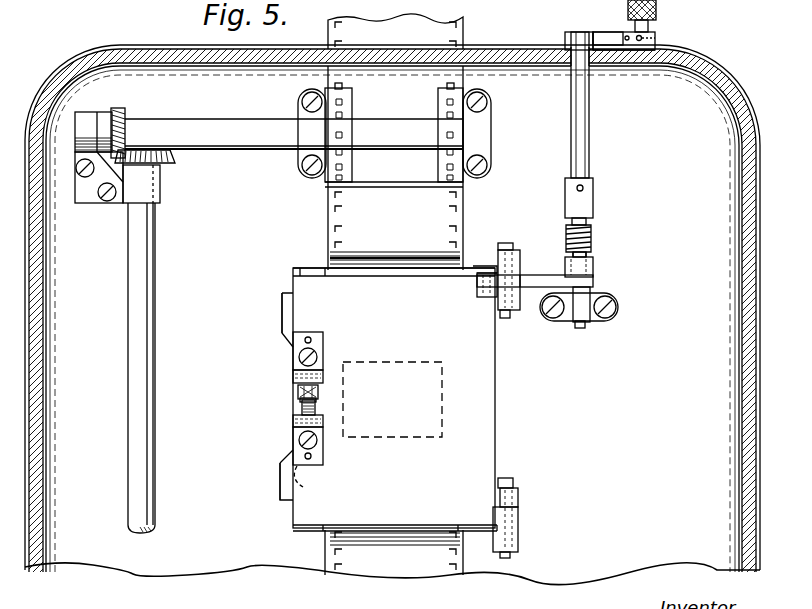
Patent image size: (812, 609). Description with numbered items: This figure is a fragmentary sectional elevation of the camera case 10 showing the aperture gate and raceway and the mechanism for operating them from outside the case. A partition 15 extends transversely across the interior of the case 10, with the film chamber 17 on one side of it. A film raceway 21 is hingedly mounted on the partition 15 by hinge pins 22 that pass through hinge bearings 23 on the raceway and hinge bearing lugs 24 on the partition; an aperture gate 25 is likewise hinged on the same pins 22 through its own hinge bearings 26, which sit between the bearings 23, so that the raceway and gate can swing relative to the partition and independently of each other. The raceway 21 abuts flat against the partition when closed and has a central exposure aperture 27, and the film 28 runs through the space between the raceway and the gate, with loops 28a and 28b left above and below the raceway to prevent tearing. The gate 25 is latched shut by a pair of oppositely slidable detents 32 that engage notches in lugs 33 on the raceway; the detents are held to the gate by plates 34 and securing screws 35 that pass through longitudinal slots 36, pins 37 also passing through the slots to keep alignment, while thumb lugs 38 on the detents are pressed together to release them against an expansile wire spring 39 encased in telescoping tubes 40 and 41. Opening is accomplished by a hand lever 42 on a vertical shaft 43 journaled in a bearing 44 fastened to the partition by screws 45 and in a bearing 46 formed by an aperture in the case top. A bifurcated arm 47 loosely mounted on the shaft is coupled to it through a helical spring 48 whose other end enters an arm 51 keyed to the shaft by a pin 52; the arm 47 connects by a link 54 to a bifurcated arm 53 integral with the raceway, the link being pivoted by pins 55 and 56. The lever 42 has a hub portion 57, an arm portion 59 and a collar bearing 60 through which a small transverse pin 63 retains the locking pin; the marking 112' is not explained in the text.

The camera case 10 is at (491, 57).
The partition 15 is at (710, 147).
The film chamber 17 is at (714, 381).
The film raceway 21 is at (310, 268).
The hinge pins 22 is at (505, 246).
The hinge bearings 23 is at (523, 273).
The hinge bearing lugs 24 is at (498, 258).
The aperture gate 25 is at (395, 398).
The hinge bearings 26 is at (517, 312).
The exposure aperture 27 is at (407, 425).
The film 28 is at (418, 25).
The film loop 28a is at (452, 205).
The film loop 28b is at (423, 538).
The slidable detents 32 is at (291, 346).
The lugs 33 is at (282, 316).
The plates 34 is at (323, 345).
The securing screws 35 is at (293, 376).
The slots 36 is at (325, 340).
The pins 37 is at (308, 337).
The thumb lugs 38 is at (298, 390).
The expansile wire spring 39 is at (300, 401).
The telescoping tube 40 is at (343, 400).
The telescoping tube 41 is at (317, 408).
The hand lever 42 is at (690, 3).
The shaft 43 is at (583, 128).
The bearing 44 is at (590, 322).
The screws 45 is at (618, 300).
The bearing 46 is at (571, 70).
The bifurcated arm 47 is at (597, 268).
The helical spring 48 is at (593, 232).
The arm 51 is at (585, 203).
The pin 52 is at (583, 187).
The bifurcated arm 53 is at (483, 280).
The link 54 is at (530, 291).
The pin 55 is at (595, 247).
The pin 56 is at (457, 268).
The hub portion 57 is at (566, 36).
The arm portion 59 is at (612, 36).
The collar bearing 60 is at (657, 40).
The pin 63 is at (636, 37).
The reference 112' is at (504, 8).